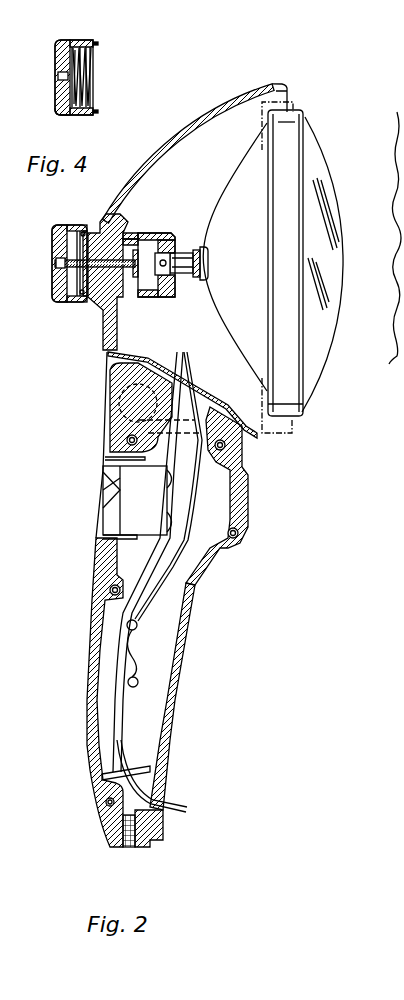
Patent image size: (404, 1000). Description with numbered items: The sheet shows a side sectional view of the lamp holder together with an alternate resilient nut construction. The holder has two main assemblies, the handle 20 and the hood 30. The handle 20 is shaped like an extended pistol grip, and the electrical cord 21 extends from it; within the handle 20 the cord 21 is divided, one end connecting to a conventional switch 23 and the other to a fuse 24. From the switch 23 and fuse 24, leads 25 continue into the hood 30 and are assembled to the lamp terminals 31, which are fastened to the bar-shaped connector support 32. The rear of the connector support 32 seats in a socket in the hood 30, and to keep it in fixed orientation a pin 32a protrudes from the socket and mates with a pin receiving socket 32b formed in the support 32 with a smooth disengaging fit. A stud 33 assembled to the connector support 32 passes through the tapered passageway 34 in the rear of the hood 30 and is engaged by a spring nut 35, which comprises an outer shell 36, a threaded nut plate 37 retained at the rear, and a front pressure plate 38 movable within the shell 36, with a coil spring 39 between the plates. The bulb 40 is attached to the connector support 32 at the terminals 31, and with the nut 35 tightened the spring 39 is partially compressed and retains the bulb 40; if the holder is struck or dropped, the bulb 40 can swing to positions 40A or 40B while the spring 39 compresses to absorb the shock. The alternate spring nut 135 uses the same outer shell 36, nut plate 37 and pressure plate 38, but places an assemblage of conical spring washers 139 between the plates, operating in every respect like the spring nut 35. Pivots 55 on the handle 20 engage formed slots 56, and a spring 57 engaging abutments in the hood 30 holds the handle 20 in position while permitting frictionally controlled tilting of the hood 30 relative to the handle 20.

In FIG. 4, the alternate spring nut 135 is at (66, 32).
In FIG. 4, the conical spring washers 139 is at (93, 48).
In FIG. 4, the threaded nut plate 37 is at (56, 70).
In FIG. 2, the threaded nut plate 37 is at (53, 243).
In FIG. 4, the front pressure plate 38 is at (95, 88).
In FIG. 4, the outer shell 36 is at (57, 113).
In FIG. 2, the outer shell 36 is at (53, 294).
In FIG. 2, the hood 30 is at (192, 129).
In FIG. 2, the pin 32a is at (126, 233).
In FIG. 2, the pin receiving socket 32b is at (134, 240).
In FIG. 2, the connector support 32 is at (157, 236).
In FIG. 2, the coil spring 39 is at (79, 231).
In FIG. 2, the tapered passageway 34 is at (104, 233).
In FIG. 2, the spring nut 35 is at (52, 271).
In FIG. 2, the stud 33 is at (113, 268).
In FIG. 2, the lamp terminals 31 is at (165, 272).
In FIG. 2, the swung bulb position 40A is at (291, 110).
In FIG. 2, the bulb 40 is at (313, 150).
In FIG. 2, the swung bulb position 40B is at (292, 430).
In FIG. 2, the spring 57 is at (150, 357).
In FIG. 2, the leads 25 is at (179, 359).
In FIG. 2, the pivots 55 is at (123, 397).
In FIG. 2, the formed slots 56 is at (203, 420).
In FIG. 2, the switch 23 is at (133, 510).
In FIG. 2, the handle 20 is at (92, 657).
In FIG. 2, the fuse 24 is at (139, 661).
In FIG. 2, the electrical cord 21 is at (174, 785).